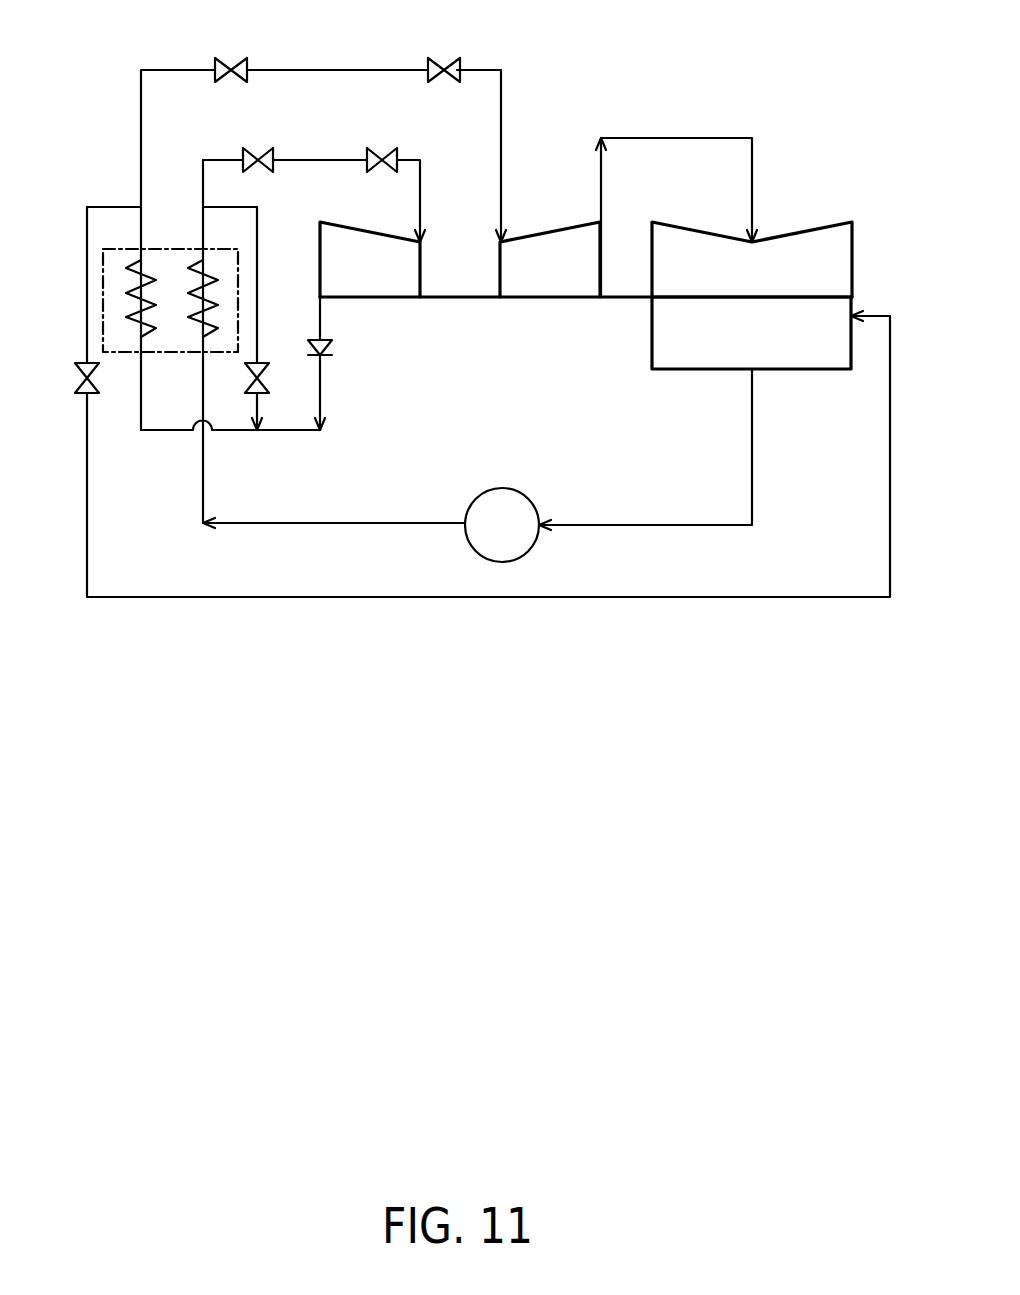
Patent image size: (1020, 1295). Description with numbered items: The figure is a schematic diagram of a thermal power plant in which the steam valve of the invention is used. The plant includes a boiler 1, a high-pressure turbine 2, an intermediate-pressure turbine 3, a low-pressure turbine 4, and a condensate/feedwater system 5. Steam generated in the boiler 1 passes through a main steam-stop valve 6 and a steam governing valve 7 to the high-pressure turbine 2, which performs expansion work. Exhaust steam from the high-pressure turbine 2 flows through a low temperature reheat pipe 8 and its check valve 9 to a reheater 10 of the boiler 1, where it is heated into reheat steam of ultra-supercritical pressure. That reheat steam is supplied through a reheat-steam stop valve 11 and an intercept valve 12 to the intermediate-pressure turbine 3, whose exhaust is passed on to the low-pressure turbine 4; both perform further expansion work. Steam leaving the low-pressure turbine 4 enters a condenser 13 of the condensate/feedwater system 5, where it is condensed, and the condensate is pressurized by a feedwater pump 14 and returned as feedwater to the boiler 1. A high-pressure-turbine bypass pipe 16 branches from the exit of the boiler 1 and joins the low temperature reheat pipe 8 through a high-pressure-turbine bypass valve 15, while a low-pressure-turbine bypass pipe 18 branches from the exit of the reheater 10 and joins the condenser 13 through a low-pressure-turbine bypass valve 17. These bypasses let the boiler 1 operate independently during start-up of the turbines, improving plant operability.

The boiler 1 is at (103, 262).
The high-pressure turbine 2 is at (405, 300).
The intermediate-pressure turbine 3 is at (512, 300).
The low-pressure turbine 4 is at (802, 232).
The condensate/feedwater system 5 is at (633, 524).
The main steam-stop valve 6 is at (258, 148).
The steam governing valve 7 is at (382, 148).
The low temperature reheat pipe 8 is at (284, 432).
The check valve 9 is at (333, 347).
The reheater 10 is at (130, 302).
The reheat-steam stop valve 11 is at (231, 58).
The intercept valve 12 is at (443, 58).
The condenser 13 is at (807, 367).
The feedwater pump 14 is at (500, 488).
The high-pressure-turbine bypass valve 15 is at (260, 380).
The high-pressure-turbine bypass pipe 16 is at (258, 258).
The low-pressure-turbine bypass valve 17 is at (73, 378).
The low-pressure-turbine bypass pipe 18 is at (85, 493).